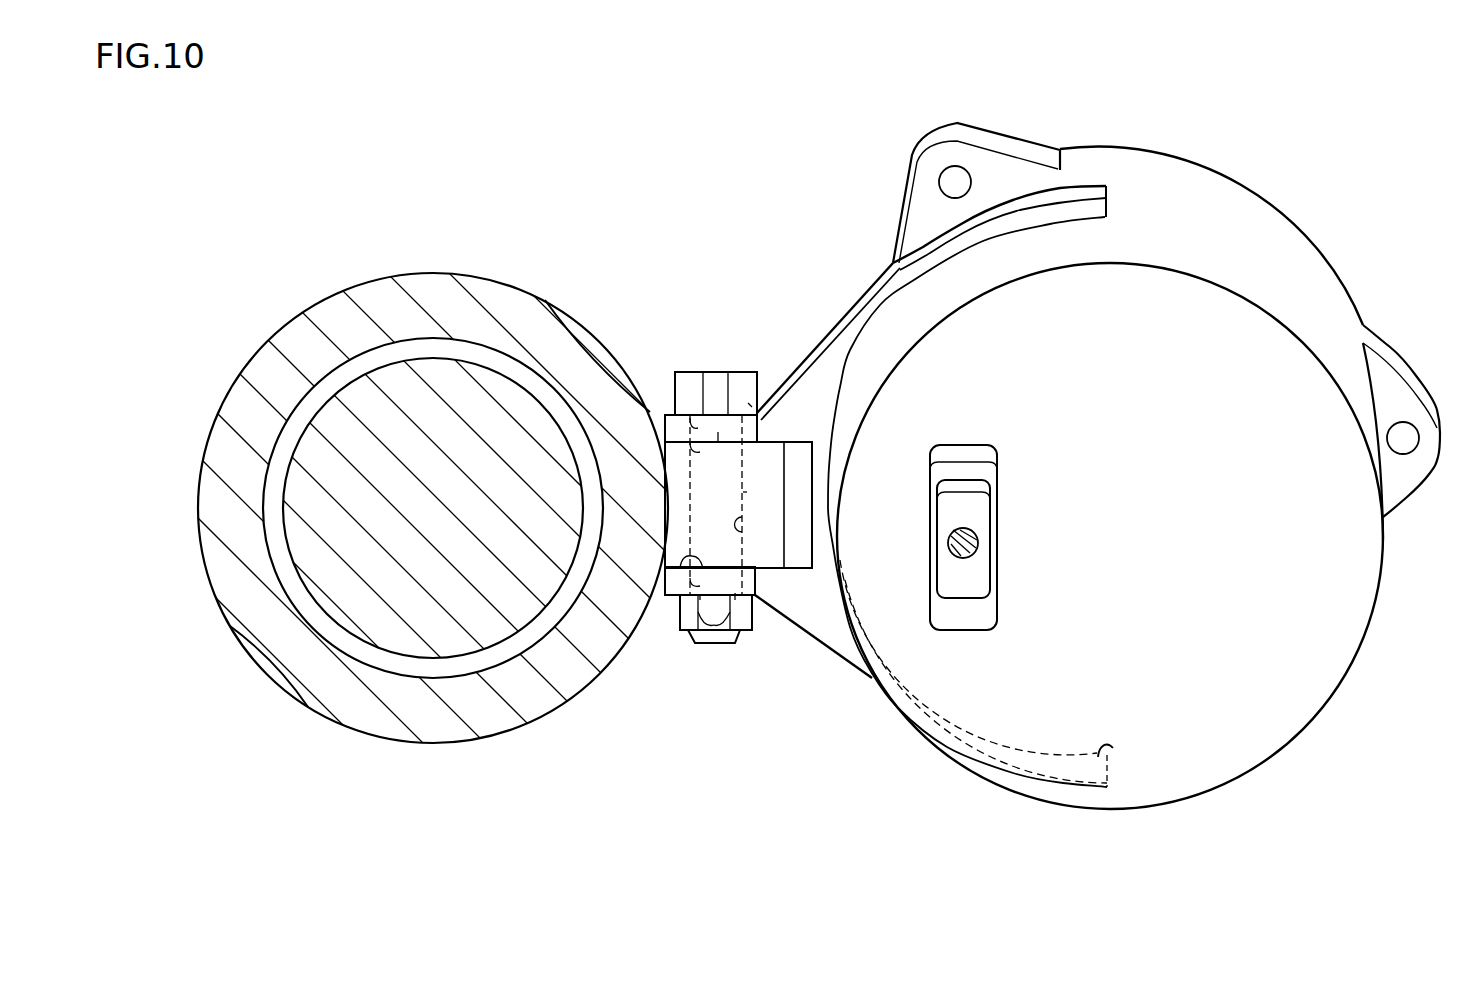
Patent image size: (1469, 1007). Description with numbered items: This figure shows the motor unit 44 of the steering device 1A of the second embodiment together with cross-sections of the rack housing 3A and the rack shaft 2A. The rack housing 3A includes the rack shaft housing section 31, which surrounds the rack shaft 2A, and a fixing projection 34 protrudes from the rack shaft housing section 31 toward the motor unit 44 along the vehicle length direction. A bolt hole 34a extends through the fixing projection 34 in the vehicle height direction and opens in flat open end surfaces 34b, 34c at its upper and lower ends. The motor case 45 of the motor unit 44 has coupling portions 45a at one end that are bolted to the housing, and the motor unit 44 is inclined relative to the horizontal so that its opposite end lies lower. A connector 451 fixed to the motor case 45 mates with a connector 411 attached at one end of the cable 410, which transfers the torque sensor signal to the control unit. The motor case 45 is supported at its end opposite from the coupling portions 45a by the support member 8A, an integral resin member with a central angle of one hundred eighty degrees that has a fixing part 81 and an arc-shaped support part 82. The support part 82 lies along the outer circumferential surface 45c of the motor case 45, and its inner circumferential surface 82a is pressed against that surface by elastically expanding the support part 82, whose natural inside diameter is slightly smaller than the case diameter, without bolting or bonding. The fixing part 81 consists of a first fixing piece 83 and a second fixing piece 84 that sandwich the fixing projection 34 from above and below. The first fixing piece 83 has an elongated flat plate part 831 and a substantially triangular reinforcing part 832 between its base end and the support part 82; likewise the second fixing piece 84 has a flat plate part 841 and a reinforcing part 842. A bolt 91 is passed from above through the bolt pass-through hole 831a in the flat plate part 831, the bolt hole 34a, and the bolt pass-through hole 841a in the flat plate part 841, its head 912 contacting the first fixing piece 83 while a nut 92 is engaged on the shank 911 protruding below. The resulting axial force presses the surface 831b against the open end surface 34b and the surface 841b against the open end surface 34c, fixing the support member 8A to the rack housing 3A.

The steering device 1A is at (566, 196).
The rack housing 3A is at (304, 268).
The rack shaft housing section 31 is at (290, 350).
The rack shaft 2A is at (292, 440).
The fixing part 81 is at (656, 386).
The surface 831b is at (677, 417).
The bolt pass-through hole 831a is at (703, 430).
The open end surface 34b is at (718, 430).
The first fixing piece 83 is at (755, 351).
The flat plate part 831 is at (741, 430).
The reinforcing part 832 is at (802, 393).
The fixing projection 34 is at (787, 522).
The bolt hole 34a is at (742, 528).
The open end surface 34c is at (735, 640).
The bolt 91 is at (838, 455).
The head 912 is at (749, 404).
The shank 911 is at (745, 492).
The nut 92 is at (713, 618).
The second fixing piece 84 is at (734, 673).
The flat plate part 841 is at (738, 652).
The bolt pass-through hole 841a is at (700, 635).
The surface 841b is at (670, 595).
The reinforcing part 842 is at (797, 596).
The motor unit 44 is at (1286, 188).
The motor case 45 is at (1313, 233).
The outer circumferential surface 45c is at (1320, 283).
The coupling portion 45a is at (938, 143).
The support member 8A is at (1112, 170).
The support part 82 is at (1090, 183).
The inner circumferential surface 82a is at (1113, 750).
The connector 451 is at (958, 448).
The connector 411 is at (968, 485).
The cable 410 is at (978, 555).